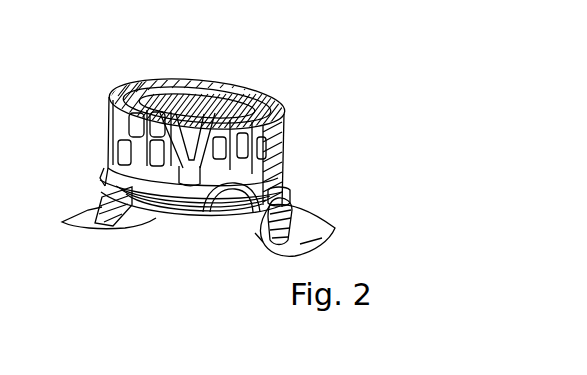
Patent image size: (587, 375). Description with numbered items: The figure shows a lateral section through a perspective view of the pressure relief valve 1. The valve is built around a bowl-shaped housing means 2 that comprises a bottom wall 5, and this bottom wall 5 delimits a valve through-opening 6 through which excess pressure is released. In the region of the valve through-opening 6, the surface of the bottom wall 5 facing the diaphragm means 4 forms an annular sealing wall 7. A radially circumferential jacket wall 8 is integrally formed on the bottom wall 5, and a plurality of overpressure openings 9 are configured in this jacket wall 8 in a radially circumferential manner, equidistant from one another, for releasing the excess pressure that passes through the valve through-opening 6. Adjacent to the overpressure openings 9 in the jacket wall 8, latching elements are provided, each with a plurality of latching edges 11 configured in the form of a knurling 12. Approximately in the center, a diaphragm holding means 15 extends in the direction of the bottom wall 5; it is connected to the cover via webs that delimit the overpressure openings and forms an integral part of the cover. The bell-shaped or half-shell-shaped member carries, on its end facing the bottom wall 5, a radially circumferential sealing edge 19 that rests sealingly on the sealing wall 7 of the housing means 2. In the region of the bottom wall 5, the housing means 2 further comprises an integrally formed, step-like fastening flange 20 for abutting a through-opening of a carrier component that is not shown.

The pressure relief valve 1 is at (300, 46).
The bowl-shaped housing means 2 is at (114, 147).
The diaphragm means 4 is at (226, 183).
The bottom wall 5 is at (122, 205).
The valve through-opening 6 is at (165, 250).
The annular sealing wall 7 is at (285, 148).
The jacket wall 8 is at (104, 167).
The overpressure openings 9 is at (152, 128).
The latching edges 11 is at (327, 183).
The knurling 12 is at (284, 196).
The diaphragm holding means 15 is at (200, 138).
The sealing edge 19 is at (113, 186).
The fastening flange 20 is at (313, 237).